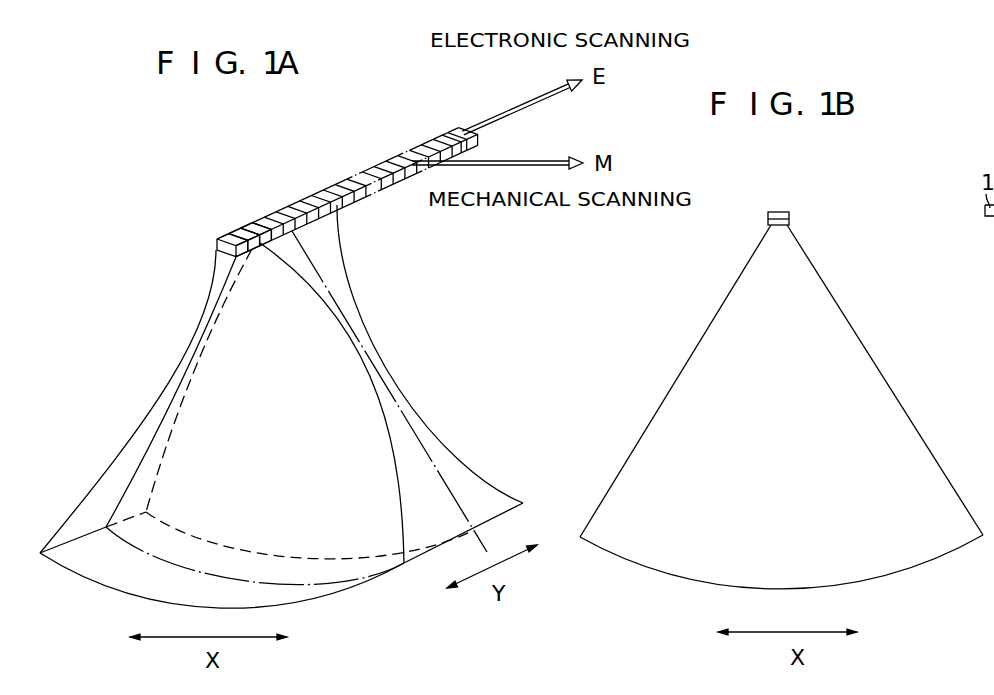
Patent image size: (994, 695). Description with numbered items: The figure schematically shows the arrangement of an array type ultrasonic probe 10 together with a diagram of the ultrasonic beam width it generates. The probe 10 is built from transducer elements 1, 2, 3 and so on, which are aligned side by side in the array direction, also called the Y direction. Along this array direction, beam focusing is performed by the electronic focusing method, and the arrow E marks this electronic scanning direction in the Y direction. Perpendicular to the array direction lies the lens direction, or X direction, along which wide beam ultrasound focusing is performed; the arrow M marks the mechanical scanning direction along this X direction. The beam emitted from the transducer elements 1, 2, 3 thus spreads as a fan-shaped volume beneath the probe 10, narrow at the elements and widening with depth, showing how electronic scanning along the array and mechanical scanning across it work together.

In FIG. 1A, the transducer element 1 is at (223, 235).
In FIG. 1B, the transducer element 1 is at (778, 211).
In FIG. 1A, the transducer element 2 is at (241, 231).
In FIG. 1A, the transducer element 3 is at (256, 227).
In FIG. 1A, the array type ultrasonic probe 10 is at (283, 204).
In FIG. 1B, the array type ultrasonic probe 10 is at (819, 192).